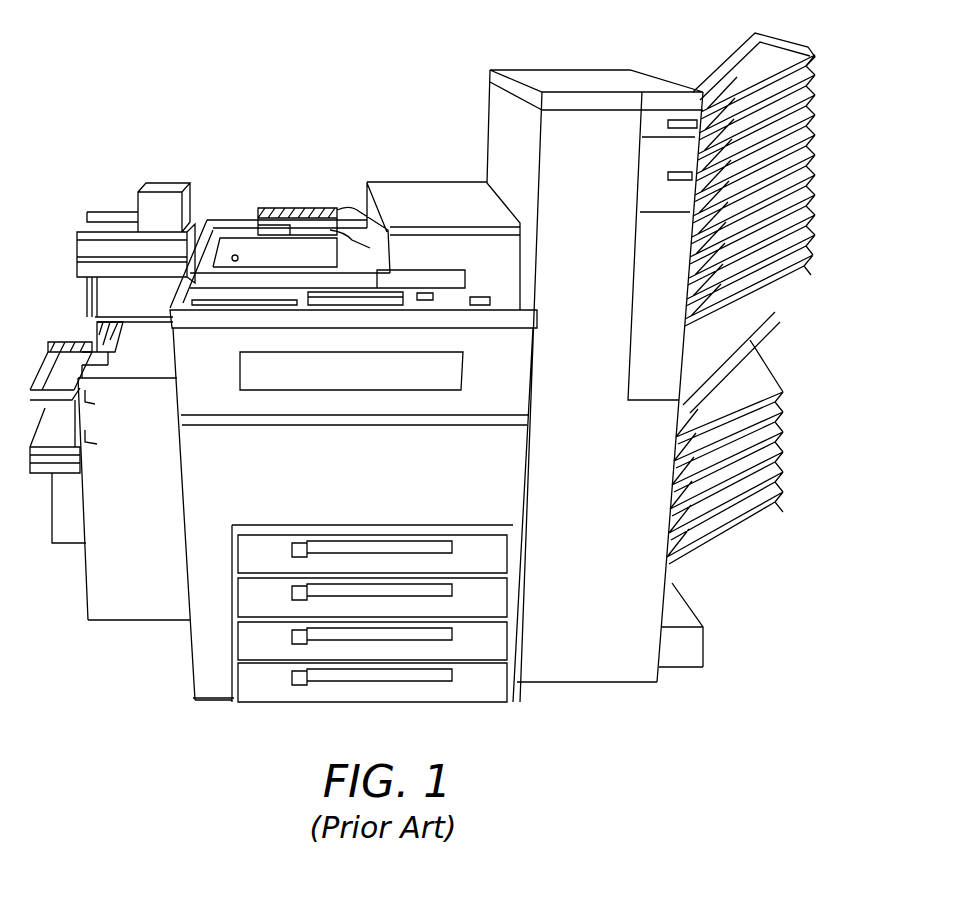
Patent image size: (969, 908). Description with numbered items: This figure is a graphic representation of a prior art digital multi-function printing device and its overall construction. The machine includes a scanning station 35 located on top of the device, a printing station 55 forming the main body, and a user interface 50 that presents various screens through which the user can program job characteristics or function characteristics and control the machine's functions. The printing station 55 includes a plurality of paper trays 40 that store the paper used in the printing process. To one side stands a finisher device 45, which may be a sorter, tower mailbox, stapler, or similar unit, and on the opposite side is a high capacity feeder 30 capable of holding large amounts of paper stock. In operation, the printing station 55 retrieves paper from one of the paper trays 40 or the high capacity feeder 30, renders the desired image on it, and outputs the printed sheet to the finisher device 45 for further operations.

The high capacity feeder 30 is at (110, 622).
The scanning station 35 is at (288, 207).
The paper trays 40 is at (497, 703).
The finisher device 45 is at (657, 682).
The user interface 50 is at (375, 312).
The printing station 55 is at (200, 700).